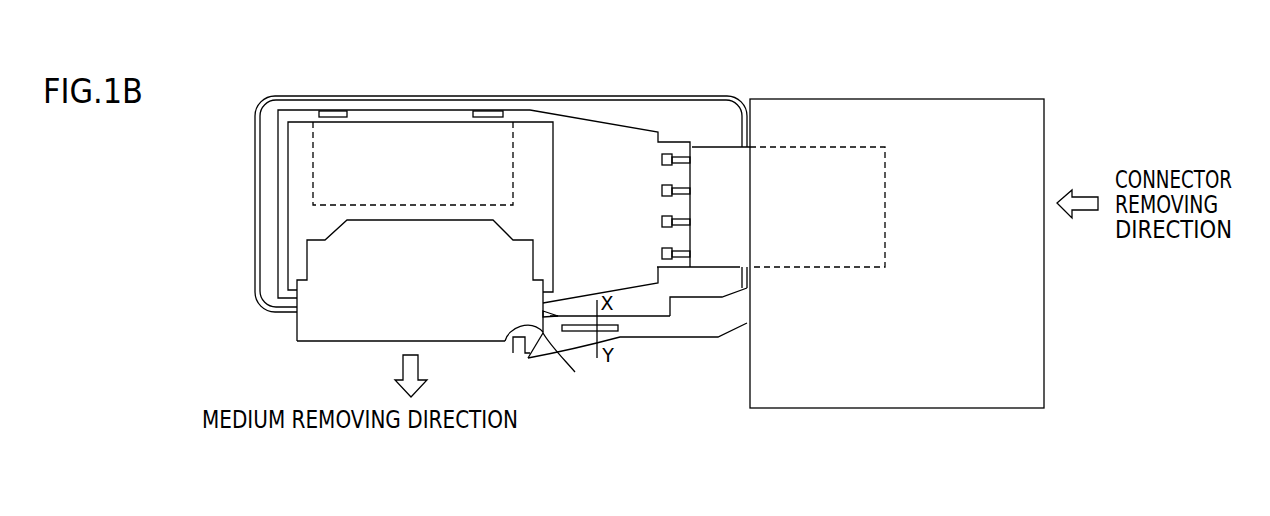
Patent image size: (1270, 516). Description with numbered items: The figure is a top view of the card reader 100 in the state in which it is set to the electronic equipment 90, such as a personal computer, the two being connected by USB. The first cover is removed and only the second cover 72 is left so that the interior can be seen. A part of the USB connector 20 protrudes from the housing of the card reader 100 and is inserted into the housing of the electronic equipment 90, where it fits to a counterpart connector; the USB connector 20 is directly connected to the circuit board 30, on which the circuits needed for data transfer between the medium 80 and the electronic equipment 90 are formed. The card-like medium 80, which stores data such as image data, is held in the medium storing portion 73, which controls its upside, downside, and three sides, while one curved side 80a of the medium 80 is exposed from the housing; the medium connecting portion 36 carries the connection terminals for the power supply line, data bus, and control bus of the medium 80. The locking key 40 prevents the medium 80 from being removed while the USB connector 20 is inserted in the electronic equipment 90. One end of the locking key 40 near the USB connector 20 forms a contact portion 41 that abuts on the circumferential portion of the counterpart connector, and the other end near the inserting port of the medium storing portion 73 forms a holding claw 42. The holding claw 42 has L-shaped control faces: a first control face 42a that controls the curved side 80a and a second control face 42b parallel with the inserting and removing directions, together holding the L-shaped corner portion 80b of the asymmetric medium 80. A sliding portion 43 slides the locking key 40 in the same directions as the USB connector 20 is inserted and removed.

The card reader 100 is at (477, 72).
The USB connector 20 is at (800, 157).
The circuit board 30 is at (618, 143).
The medium connecting portion 36 is at (313, 143).
The locking key 40 is at (652, 324).
The contact portion 41 is at (752, 305).
The holding claw 42 is at (545, 333).
The first control face 42a is at (526, 338).
The second control face 42b is at (583, 368).
The sliding portion 43 is at (614, 336).
The second cover 72 is at (256, 158).
The medium storing portion 73 is at (302, 222).
The medium 80 is at (312, 338).
The curved side 80a is at (340, 339).
The corner portion 80b is at (510, 336).
The electronic equipment 90 is at (955, 99).